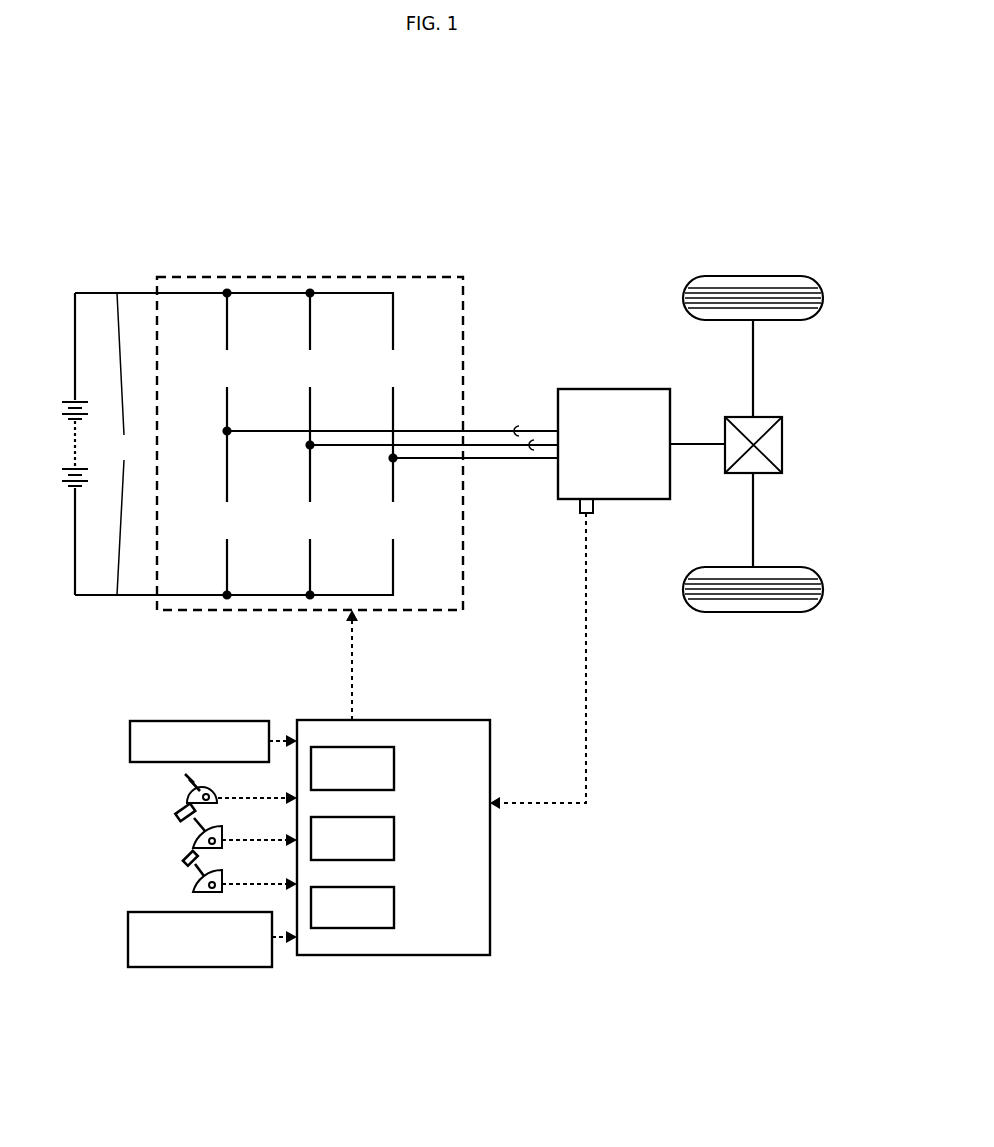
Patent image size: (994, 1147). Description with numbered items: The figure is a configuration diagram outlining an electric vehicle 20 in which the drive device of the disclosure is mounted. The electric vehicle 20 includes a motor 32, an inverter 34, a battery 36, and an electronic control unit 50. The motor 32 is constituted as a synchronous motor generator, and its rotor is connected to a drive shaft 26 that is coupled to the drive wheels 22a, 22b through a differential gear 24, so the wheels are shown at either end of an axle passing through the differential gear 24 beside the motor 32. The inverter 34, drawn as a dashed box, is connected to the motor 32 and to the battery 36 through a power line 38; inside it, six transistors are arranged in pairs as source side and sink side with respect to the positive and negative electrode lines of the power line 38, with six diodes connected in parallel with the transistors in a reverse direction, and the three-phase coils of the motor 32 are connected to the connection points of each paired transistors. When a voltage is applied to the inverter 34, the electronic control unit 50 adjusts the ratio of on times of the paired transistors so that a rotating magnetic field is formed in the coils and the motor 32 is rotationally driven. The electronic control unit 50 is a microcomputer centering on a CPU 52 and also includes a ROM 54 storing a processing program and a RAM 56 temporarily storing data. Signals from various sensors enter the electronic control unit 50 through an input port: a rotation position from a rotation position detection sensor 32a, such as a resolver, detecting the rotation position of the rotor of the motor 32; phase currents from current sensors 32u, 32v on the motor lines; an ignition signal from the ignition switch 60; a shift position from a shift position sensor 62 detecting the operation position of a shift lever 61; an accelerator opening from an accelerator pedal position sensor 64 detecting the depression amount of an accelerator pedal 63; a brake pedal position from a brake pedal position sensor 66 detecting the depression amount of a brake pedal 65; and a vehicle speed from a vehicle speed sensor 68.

The electric vehicle 20 is at (559, 252).
The drive wheel 22a is at (753, 275).
The drive wheel 22b is at (757, 614).
The differential gear 24 is at (767, 415).
The drive shaft 26 is at (697, 443).
The motor 32 is at (614, 388).
The rotation position detection sensor 32a is at (594, 507).
The current sensor 32u is at (516, 427).
The current sensor 32v is at (531, 441).
The inverter 34 is at (311, 277).
The battery 36 is at (70, 398).
The power line 38 is at (122, 444).
The electronic control unit 50 is at (393, 720).
The CPU 52 is at (394, 766).
The ROM 54 is at (394, 836).
The RAM 56 is at (394, 906).
The ignition switch 60 is at (130, 741).
The shift lever 61 is at (185, 785).
The shift position sensor 62 is at (188, 801).
The accelerator pedal 63 is at (195, 824).
The accelerator pedal position sensor 64 is at (200, 843).
The brake pedal 65 is at (195, 870).
The brake pedal position sensor 66 is at (200, 888).
The vehicle speed sensor 68 is at (128, 938).